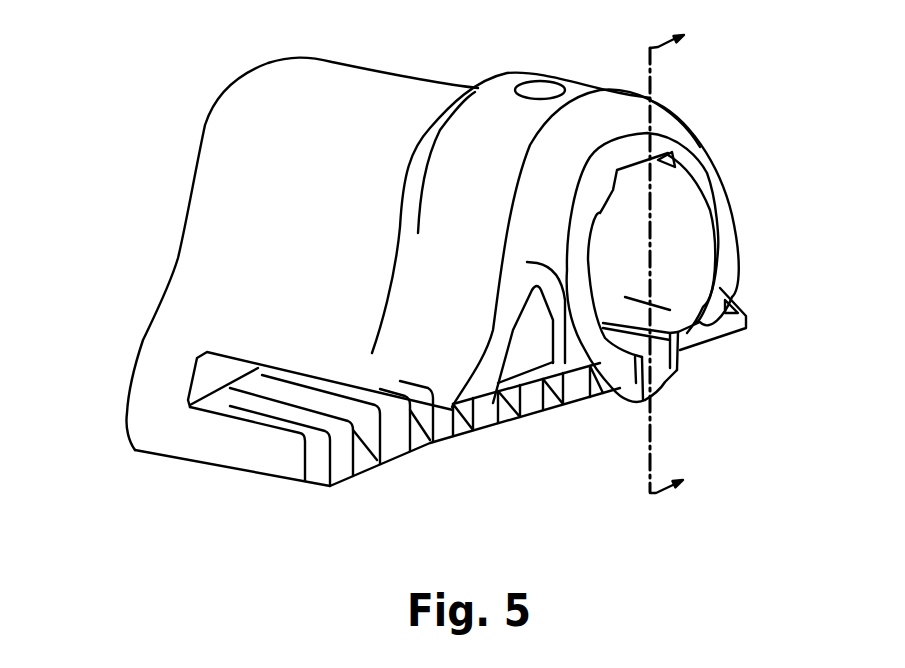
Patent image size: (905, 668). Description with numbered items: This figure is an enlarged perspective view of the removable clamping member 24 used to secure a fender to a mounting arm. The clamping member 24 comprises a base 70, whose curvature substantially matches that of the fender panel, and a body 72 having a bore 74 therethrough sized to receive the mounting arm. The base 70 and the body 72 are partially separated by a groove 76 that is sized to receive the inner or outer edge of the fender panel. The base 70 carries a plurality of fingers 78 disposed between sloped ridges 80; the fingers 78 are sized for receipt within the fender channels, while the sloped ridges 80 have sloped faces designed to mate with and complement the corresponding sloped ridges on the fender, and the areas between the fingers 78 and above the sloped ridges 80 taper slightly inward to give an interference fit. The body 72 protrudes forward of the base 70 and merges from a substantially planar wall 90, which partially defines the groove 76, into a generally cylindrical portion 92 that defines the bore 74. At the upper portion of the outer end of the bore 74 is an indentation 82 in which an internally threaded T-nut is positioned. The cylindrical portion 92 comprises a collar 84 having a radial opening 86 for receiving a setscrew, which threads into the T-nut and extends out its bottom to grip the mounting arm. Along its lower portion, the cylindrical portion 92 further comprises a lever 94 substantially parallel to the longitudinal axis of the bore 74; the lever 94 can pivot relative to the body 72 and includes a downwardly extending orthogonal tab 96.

The clamping member 24 is at (140, 118).
The base 70 is at (160, 462).
The body 72 is at (256, 94).
The bore 74 is at (637, 260).
The groove 76 is at (211, 374).
The fingers 78 is at (402, 442).
The sloped ridges 80 is at (432, 445).
The indentation 82 is at (680, 163).
The collar 84 is at (588, 93).
The radial opening 86 is at (529, 96).
The planar wall 90 is at (524, 382).
The cylindrical portion 92 is at (665, 120).
The lever 94 is at (707, 336).
The tab 96 is at (612, 402).